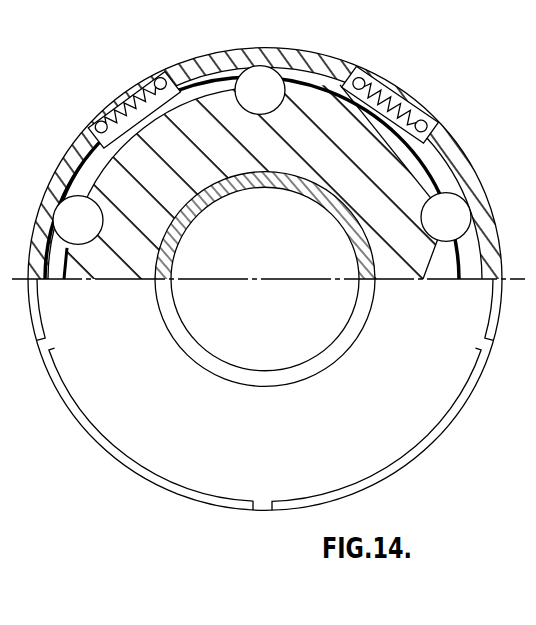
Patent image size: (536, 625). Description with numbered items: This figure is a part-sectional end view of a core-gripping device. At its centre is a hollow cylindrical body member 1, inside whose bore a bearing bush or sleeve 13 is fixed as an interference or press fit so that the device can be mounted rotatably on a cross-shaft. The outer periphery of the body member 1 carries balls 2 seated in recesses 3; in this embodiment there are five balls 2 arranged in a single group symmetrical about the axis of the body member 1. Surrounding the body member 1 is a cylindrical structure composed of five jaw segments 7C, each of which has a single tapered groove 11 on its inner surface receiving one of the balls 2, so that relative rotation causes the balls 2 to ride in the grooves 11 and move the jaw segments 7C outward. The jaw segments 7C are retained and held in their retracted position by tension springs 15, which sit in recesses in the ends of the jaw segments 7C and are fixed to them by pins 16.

The body member 1 is at (337, 160).
The balls 2 is at (261, 75).
The recesses 3 is at (212, 68).
The jaw segments 7C is at (317, 57).
The tapered groove 11 is at (456, 180).
The bearing bush or sleeve 13 is at (197, 206).
The tension springs 15 is at (145, 83).
The pins 16 is at (101, 127).